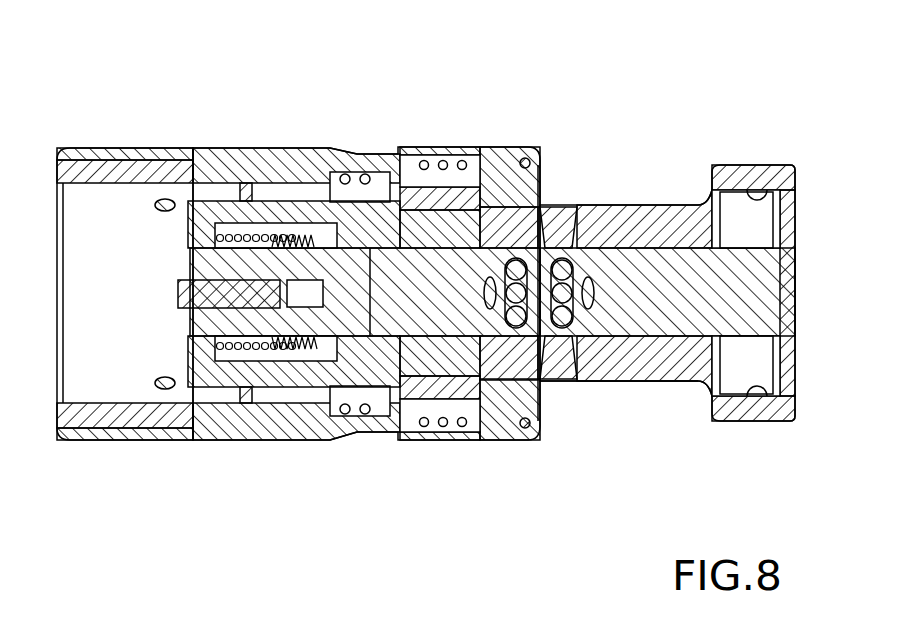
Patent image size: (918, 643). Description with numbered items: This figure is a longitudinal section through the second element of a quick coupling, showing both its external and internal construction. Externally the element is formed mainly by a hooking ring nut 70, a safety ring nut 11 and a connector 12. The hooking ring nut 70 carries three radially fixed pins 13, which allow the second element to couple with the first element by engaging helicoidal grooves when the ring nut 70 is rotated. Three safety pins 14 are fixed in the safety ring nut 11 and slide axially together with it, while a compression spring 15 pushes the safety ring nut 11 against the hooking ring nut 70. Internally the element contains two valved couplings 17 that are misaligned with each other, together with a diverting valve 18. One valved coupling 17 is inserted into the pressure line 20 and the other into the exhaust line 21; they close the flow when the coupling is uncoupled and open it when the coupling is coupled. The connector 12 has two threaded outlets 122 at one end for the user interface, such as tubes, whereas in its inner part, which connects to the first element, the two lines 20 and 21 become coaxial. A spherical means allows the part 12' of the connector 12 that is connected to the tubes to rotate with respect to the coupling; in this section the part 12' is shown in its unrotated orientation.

The safety ring nut 11 is at (330, 162).
The connector 12 is at (667, 235).
The rotating part of connector 12' is at (619, 415).
The radially fixed pins 13 is at (160, 210).
The safety pins 14 is at (250, 432).
The compression spring 15 is at (447, 158).
The valved couplings 17 is at (192, 203).
The diverting valve 18 is at (178, 296).
The pressure line 20 is at (393, 235).
The exhaust line 21 is at (388, 440).
The hooking ring nut 70 is at (243, 190).
The threaded outlets 122 is at (765, 198).